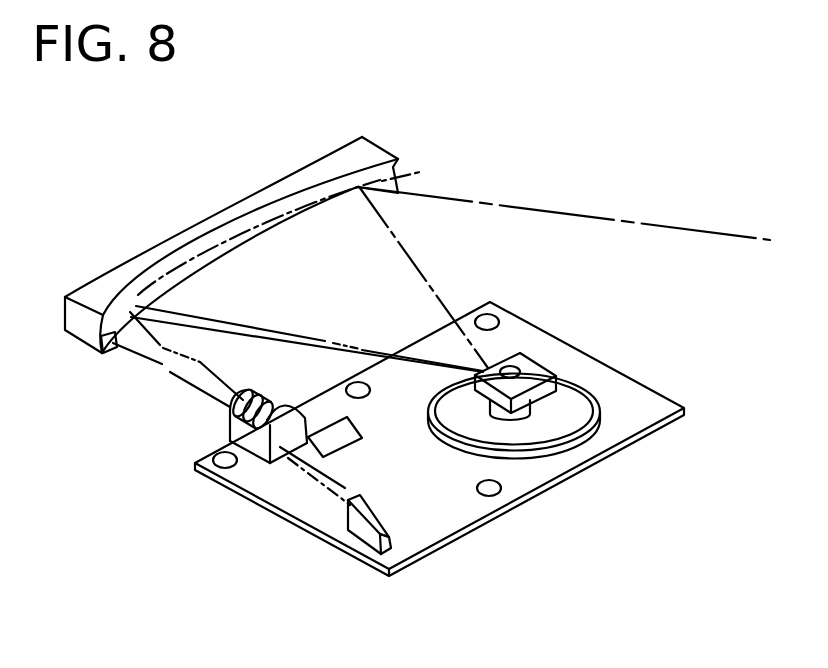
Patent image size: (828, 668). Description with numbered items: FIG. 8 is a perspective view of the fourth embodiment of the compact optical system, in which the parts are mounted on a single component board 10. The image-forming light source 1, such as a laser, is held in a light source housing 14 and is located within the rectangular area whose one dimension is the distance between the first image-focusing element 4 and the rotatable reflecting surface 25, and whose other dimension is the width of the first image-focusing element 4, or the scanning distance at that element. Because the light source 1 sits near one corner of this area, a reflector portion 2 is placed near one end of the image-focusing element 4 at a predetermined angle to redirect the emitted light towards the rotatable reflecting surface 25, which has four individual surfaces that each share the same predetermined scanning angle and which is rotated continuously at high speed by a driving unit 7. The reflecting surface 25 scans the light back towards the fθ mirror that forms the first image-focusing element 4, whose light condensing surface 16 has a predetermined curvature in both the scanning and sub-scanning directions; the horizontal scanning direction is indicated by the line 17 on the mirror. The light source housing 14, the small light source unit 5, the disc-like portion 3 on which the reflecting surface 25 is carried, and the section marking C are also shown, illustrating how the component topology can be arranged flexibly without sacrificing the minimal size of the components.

The image-forming light source 1 is at (425, 459).
The reflector portion 2 is at (110, 353).
The optical disc 3 is at (548, 425).
The first image-focusing element 4 is at (238, 235).
The light source unit 5 is at (358, 540).
The driving unit 7 is at (572, 399).
The component board 10 is at (510, 484).
The light source housing 14 is at (260, 447).
The light condensing surface 16 is at (245, 213).
The scanning direction line 17 is at (295, 207).
The rotatable reflecting surface 25 is at (556, 376).
The section line C- C is at (348, 527).